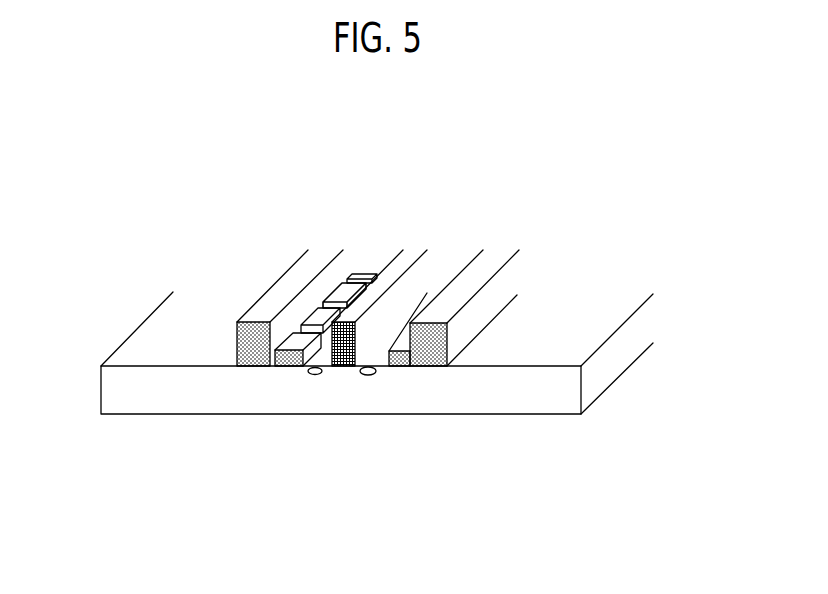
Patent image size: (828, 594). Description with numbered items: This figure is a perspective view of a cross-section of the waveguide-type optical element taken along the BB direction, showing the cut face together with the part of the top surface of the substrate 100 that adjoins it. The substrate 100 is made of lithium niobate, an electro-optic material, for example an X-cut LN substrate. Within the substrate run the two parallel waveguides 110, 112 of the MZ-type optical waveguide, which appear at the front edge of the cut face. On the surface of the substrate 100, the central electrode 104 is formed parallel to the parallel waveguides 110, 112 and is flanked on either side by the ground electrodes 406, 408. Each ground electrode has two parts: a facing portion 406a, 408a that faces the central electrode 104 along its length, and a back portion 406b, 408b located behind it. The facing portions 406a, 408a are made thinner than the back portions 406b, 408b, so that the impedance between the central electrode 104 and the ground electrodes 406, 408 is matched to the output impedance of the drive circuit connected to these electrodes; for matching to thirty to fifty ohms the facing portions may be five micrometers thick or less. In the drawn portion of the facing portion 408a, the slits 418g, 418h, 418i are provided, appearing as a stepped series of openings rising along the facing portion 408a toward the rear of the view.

The substrate 100 is at (135, 345).
The central electrode 104 is at (343, 367).
The parallel waveguide 110 is at (372, 375).
The parallel waveguide 112 is at (315, 375).
The ground electrode 406 is at (458, 396).
The facing portion 406a is at (403, 367).
The back portion 406b is at (447, 367).
The ground electrode 408 is at (251, 396).
The facing portion 408a is at (280, 367).
The back portion 408b is at (253, 367).
The slit 418g is at (350, 277).
The slit 418h is at (322, 303).
The slit 418i is at (300, 326).